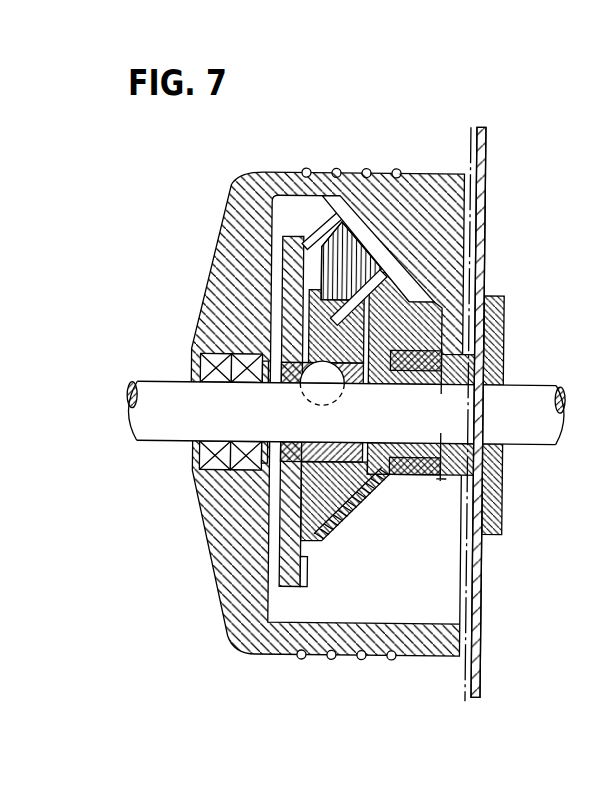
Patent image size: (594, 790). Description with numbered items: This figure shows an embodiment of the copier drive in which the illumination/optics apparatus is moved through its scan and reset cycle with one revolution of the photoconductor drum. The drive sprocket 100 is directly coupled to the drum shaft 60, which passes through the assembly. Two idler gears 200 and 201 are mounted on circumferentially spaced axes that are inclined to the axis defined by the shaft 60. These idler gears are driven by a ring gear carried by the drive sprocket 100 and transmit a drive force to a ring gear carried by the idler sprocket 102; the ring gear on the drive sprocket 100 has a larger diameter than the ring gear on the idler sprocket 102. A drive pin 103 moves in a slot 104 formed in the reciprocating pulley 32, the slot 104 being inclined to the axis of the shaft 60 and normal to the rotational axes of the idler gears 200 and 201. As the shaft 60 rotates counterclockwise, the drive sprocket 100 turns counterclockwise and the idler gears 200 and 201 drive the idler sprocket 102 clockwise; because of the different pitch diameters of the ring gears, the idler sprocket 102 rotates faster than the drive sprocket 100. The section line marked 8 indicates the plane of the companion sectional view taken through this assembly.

The reciprocating pulley 32 is at (243, 177).
The drum shaft 60 is at (527, 393).
The drive sprocket 100 is at (287, 237).
The idler sprocket 102 is at (423, 472).
The drive pin 103 is at (329, 226).
The slot 104 is at (402, 272).
The idler gear 200 is at (393, 328).
The idler gear 201 is at (356, 531).
The section line 8- 8 is at (446, 697).